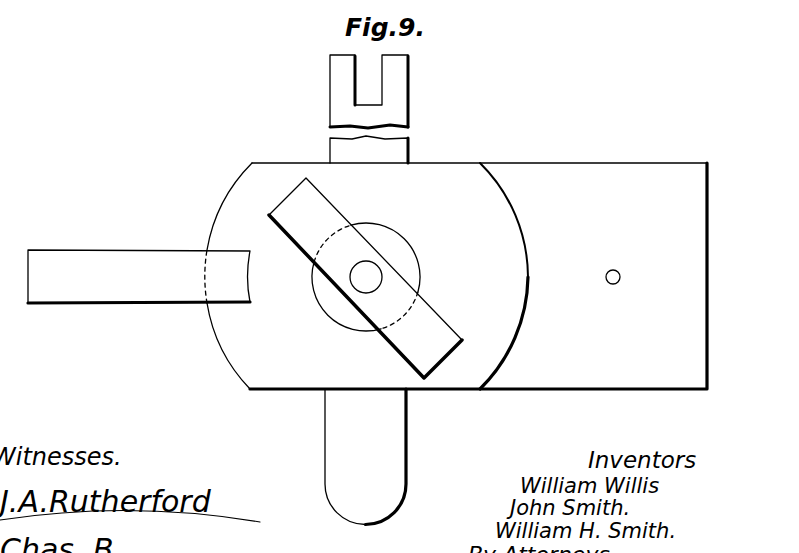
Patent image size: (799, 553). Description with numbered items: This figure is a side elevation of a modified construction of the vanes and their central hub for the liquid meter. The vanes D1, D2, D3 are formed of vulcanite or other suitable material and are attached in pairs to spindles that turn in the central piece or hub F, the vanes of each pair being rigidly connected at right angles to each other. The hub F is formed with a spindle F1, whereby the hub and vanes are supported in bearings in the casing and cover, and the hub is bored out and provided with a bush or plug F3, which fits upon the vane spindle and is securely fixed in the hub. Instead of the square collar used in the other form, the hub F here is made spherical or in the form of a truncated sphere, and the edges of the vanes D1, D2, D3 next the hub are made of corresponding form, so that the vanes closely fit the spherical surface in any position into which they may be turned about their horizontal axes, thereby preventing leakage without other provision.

The vane D1 is at (478, 276).
The vane D2 is at (365, 278).
The vane D3 is at (139, 276).
The hub F is at (366, 276).
The spindle of the hub F1 is at (366, 290).
The bush or plug F3 is at (360, 269).